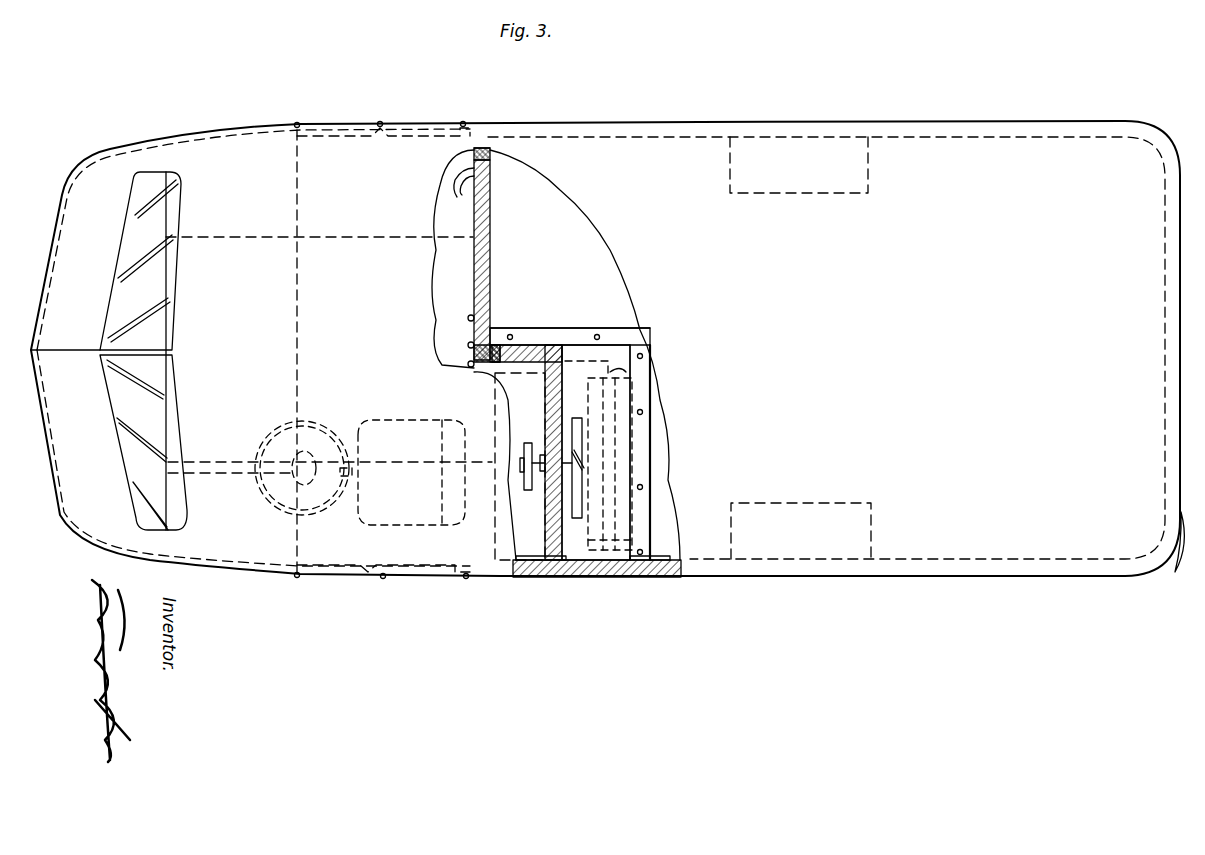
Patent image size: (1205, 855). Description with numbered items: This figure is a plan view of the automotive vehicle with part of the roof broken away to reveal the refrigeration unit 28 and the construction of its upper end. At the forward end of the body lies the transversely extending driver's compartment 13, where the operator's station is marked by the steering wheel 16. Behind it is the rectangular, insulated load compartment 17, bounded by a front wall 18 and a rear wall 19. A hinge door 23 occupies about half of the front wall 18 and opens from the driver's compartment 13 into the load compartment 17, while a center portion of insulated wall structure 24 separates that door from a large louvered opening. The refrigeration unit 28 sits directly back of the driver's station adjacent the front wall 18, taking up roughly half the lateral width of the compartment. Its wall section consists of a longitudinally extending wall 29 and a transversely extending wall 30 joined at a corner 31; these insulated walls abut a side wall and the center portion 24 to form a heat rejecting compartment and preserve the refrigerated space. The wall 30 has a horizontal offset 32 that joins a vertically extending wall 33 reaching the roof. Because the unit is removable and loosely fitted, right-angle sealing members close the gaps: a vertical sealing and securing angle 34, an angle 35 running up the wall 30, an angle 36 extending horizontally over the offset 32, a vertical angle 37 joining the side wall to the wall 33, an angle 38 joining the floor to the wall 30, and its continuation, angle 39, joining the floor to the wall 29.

The driver's compartment 13 is at (452, 168).
The steering wheel 16 is at (292, 512).
The load compartment 17 is at (549, 211).
The front wall 18 is at (468, 280).
The rear wall 19 is at (1178, 560).
The hinge door 23 is at (474, 222).
The center portion of insulated wall structure 24 is at (470, 337).
The refrigeration unit 28 is at (612, 334).
The longitudinally extending wall 29 is at (549, 345).
The transversely extending wall 30 is at (633, 450).
The corner 31 is at (651, 348).
The horizontal offset 32 is at (627, 372).
The vertically extending wall 33 is at (545, 545).
The sealing and securing angle 34 is at (496, 341).
The angle 35 is at (643, 578).
The angle 36 is at (583, 557).
The vertical angle 37 is at (545, 557).
The angle 38 is at (650, 488).
The angle 39 is at (530, 338).